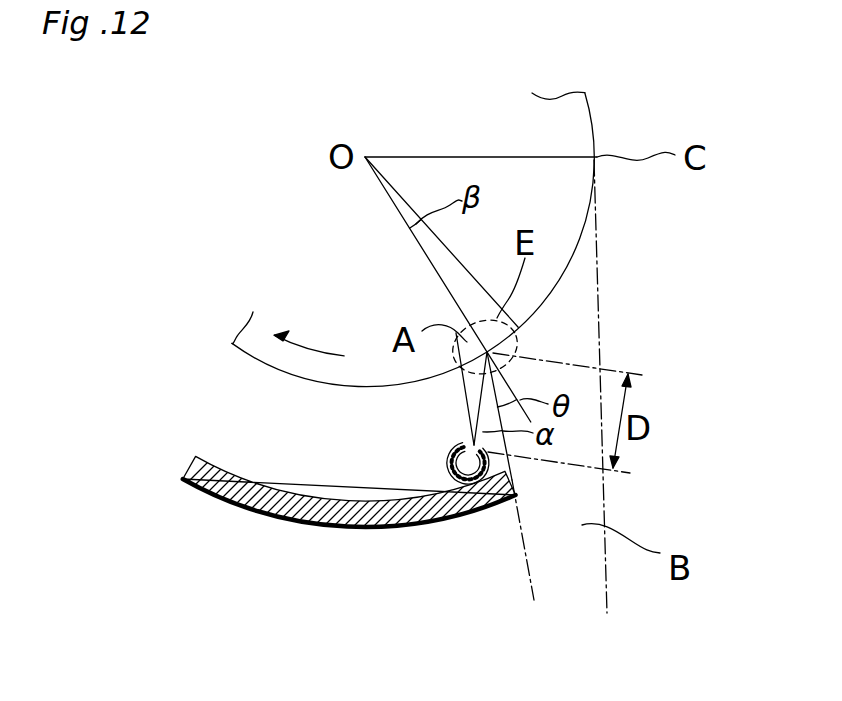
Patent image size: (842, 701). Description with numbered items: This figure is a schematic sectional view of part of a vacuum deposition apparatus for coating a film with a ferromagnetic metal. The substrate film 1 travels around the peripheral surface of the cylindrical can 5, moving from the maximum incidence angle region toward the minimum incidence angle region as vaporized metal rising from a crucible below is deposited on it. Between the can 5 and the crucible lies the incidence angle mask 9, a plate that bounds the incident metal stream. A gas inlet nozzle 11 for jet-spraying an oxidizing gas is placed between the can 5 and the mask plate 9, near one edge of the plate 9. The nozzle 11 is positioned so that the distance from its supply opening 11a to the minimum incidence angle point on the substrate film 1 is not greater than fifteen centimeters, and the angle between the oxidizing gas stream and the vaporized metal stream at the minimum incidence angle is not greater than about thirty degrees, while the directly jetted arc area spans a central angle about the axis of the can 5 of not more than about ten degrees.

The substrate film 1 is at (575, 241).
The cylindrical can 5 is at (315, 369).
The incidence angle mask 9 is at (322, 520).
The gas inlet nozzle 11 is at (487, 522).
The supply opening 11a is at (437, 522).